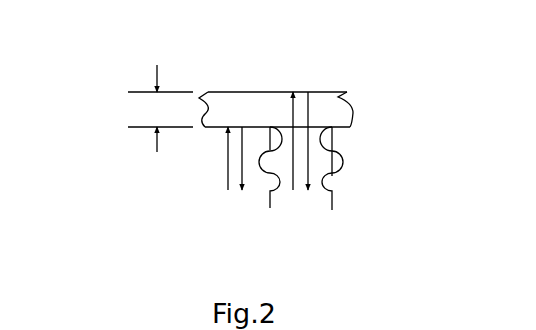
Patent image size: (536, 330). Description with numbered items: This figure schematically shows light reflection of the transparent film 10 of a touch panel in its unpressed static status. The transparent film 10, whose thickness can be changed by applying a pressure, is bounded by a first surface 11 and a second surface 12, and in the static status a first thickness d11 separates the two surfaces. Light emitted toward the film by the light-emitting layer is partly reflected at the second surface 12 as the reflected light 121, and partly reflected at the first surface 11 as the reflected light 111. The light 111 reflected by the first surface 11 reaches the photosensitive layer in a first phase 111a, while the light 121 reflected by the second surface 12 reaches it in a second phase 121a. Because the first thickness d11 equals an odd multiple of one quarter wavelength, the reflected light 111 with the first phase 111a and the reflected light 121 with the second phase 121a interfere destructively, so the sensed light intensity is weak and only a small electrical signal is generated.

The transparent film 10 is at (262, 103).
The first surface 11 is at (325, 92).
The second surface 12 is at (345, 128).
The first thickness d11 is at (140, 108).
The light reflected by the second surface 121 is at (232, 172).
The second phase 121a is at (270, 208).
The light reflected by the first surface 111 is at (308, 158).
The first phase 111a is at (332, 210).